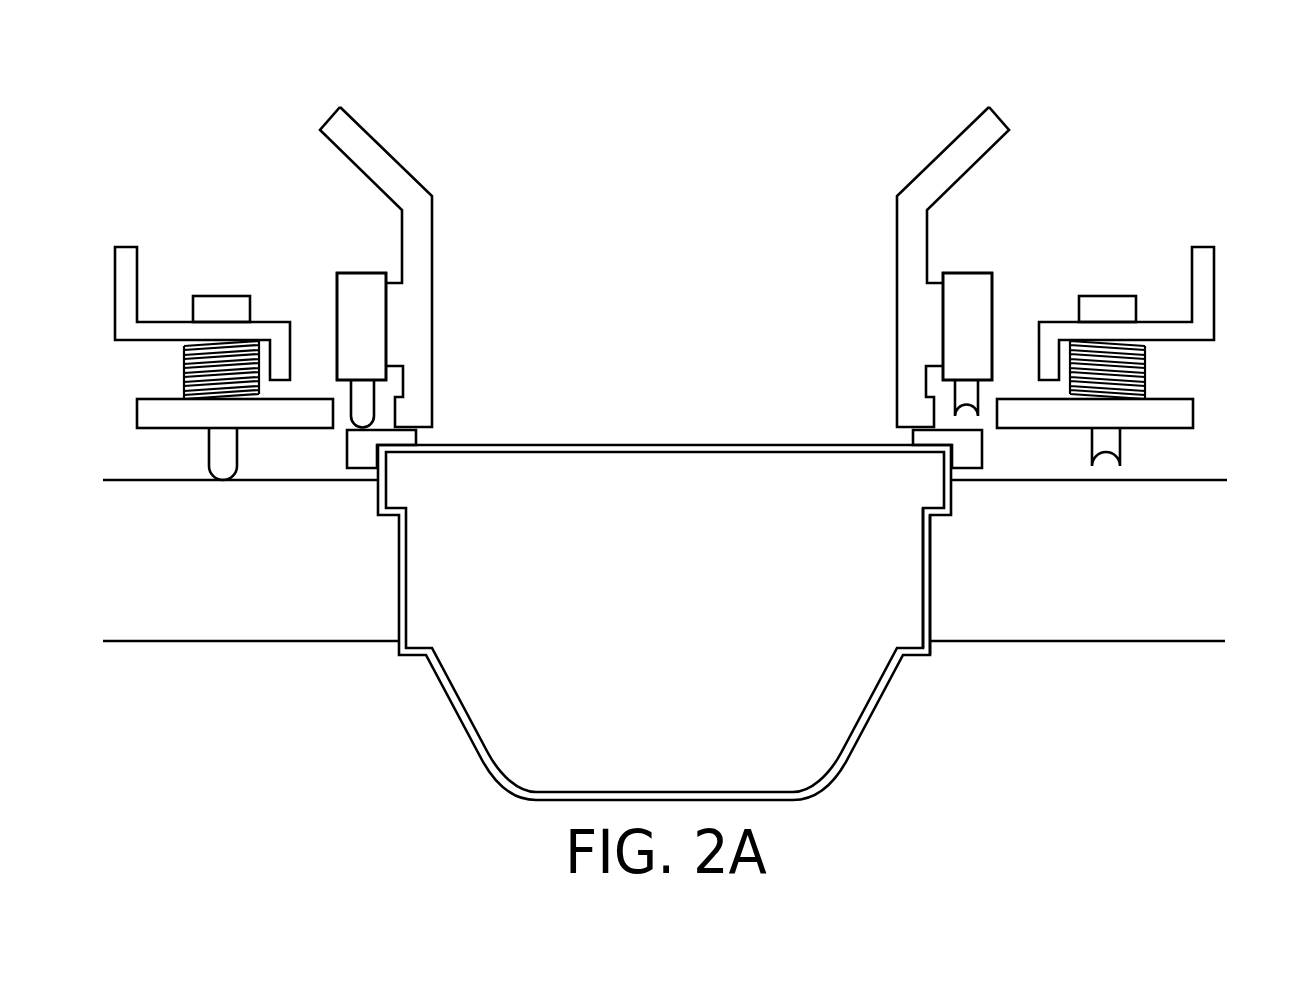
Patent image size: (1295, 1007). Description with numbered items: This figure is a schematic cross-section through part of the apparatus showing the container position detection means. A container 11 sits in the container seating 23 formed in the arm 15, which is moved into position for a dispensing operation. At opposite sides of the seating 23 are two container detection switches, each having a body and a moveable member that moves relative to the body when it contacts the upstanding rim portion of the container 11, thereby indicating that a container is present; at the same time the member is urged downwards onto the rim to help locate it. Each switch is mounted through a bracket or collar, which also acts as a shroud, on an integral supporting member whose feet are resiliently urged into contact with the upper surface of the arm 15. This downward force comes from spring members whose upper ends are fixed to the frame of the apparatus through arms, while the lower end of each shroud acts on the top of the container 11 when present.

The container 11 is at (388, 576).
The arm 15 is at (1185, 585).
The container seating 23 is at (930, 603).